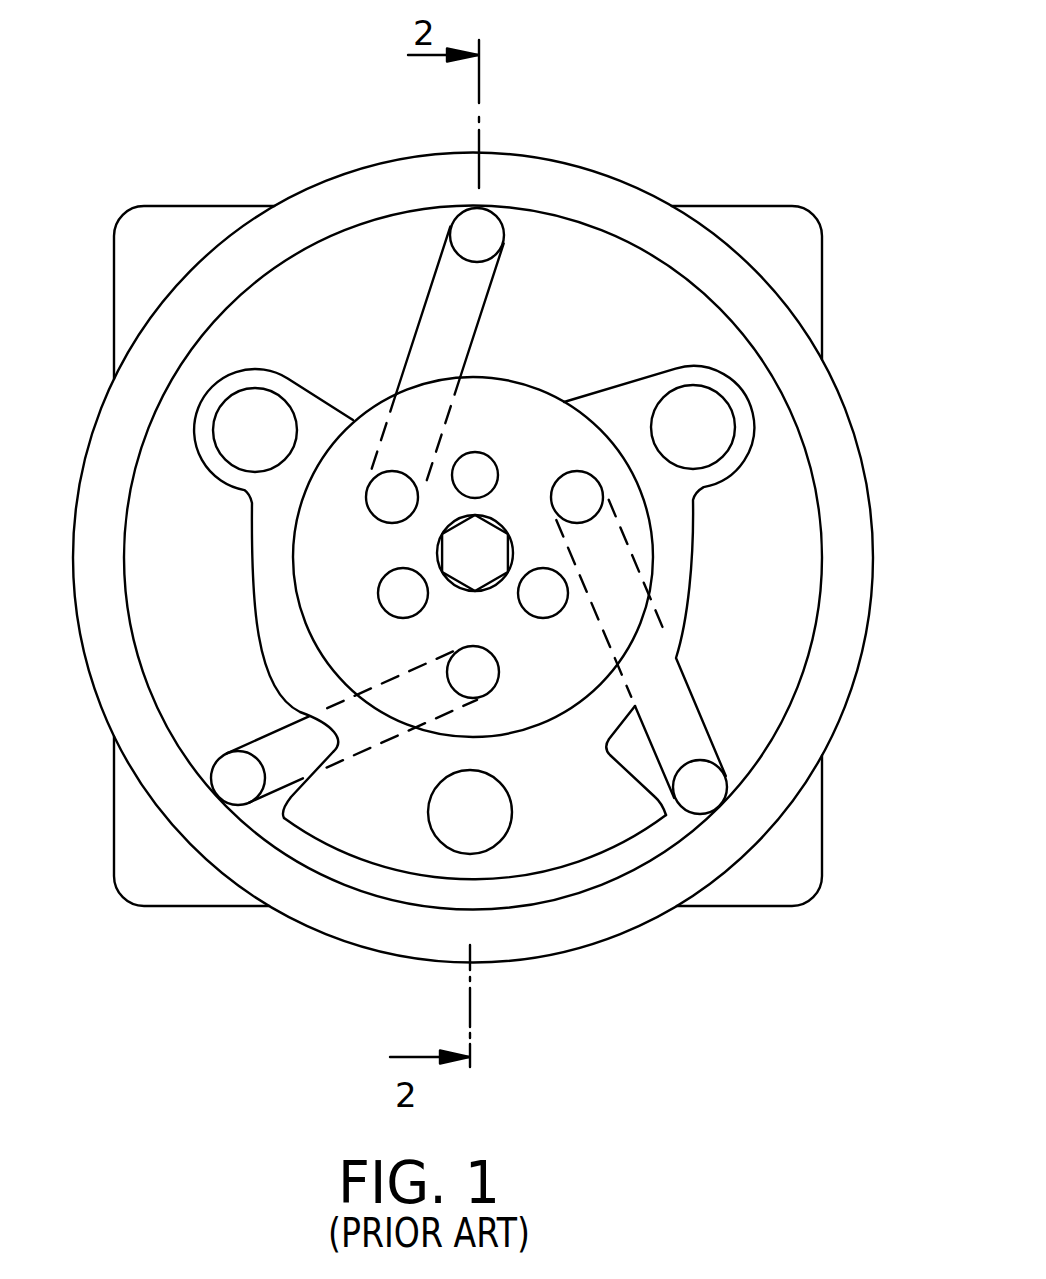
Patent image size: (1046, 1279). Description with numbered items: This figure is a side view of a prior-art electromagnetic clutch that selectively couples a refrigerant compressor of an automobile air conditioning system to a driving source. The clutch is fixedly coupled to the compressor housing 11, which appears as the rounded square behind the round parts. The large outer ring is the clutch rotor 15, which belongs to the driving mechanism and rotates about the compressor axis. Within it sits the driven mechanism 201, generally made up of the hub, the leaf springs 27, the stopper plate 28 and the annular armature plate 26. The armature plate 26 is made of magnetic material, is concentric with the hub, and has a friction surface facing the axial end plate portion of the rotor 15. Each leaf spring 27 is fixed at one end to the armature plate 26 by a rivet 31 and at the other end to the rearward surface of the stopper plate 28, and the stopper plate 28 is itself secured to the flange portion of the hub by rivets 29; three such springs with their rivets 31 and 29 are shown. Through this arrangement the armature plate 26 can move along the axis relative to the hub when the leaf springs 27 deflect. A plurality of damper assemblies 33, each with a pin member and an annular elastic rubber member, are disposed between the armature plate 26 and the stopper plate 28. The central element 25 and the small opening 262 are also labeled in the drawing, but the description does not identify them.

The compressor housing 11 is at (818, 250).
The clutch rotor 15 is at (858, 556).
The driven mechanism 201 is at (503, 561).
The nut 25 is at (484, 545).
The armature plate 26 is at (612, 865).
The hole 262 is at (484, 462).
The leaf spring 27 is at (436, 268).
The stopper plate 28 is at (537, 853).
The rivet 29 is at (383, 500).
The rivet 31 is at (487, 223).
The damper assembly 33 is at (240, 432).